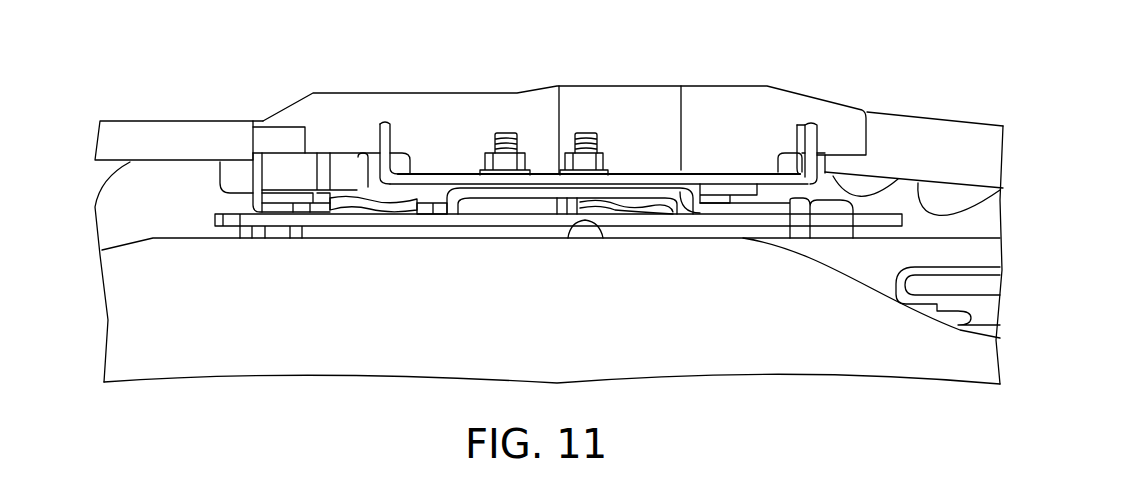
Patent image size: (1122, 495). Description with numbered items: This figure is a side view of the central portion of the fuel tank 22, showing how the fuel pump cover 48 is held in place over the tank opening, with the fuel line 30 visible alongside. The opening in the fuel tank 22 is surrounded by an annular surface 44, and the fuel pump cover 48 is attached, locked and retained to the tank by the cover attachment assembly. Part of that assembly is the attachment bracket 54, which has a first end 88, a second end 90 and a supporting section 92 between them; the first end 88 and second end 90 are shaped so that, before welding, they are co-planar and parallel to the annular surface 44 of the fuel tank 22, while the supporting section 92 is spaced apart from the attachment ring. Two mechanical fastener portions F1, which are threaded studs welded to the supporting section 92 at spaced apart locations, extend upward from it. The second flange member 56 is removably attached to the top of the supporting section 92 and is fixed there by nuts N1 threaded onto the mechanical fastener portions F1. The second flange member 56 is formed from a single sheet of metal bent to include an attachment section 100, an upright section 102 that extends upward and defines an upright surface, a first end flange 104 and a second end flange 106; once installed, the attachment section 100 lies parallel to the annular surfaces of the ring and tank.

The fuel tank 22 is at (838, 335).
The fuel line 30 is at (170, 138).
The annular surface 44 is at (570, 225).
The fuel pump cover 48 is at (765, 228).
The attachment bracket 54 is at (457, 228).
The second flange member 56 is at (717, 84).
The first end 88 is at (447, 213).
The second end 90 is at (693, 210).
The supporting section 92 is at (527, 187).
The attachment section 100 is at (720, 180).
The upright section 102 is at (660, 110).
The first end flange 104 is at (407, 135).
The second end flange 106 is at (815, 143).
The nut N1 is at (483, 160).
The mechanical fastener portion F1 is at (582, 135).